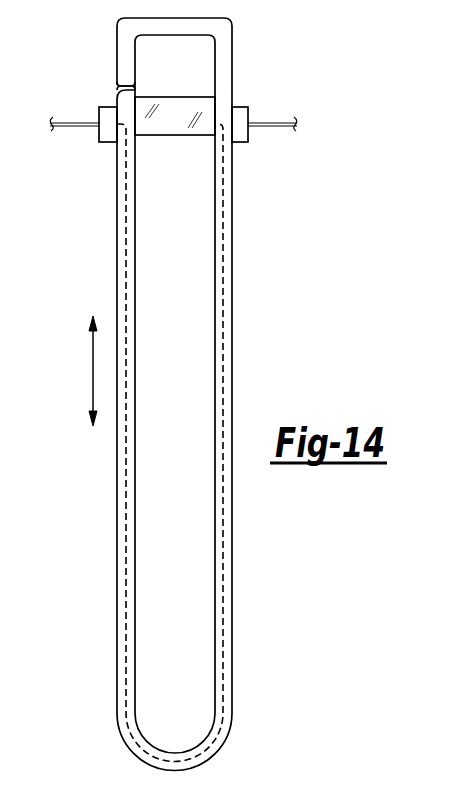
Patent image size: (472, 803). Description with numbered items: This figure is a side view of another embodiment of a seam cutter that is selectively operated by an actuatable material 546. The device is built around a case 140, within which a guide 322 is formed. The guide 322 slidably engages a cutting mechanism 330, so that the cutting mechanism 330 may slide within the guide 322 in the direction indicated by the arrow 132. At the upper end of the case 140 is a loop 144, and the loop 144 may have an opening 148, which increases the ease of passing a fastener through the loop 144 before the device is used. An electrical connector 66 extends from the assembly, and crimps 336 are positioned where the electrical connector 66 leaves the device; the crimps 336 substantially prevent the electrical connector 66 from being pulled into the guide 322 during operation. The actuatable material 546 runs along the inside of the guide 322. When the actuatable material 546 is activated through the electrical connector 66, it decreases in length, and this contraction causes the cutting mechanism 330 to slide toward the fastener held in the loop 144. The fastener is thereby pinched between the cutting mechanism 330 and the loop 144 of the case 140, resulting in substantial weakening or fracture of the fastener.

The loop 144 is at (117, 60).
The opening 148 is at (117, 88).
The guide 322 is at (232, 220).
The actuatable material 546 is at (232, 302).
The cutting mechanism 330 is at (183, 97).
The crimps 336 is at (99, 136).
The electrical connector 66 is at (75, 125).
The case 140 is at (232, 522).
The arrow 132 is at (93, 370).